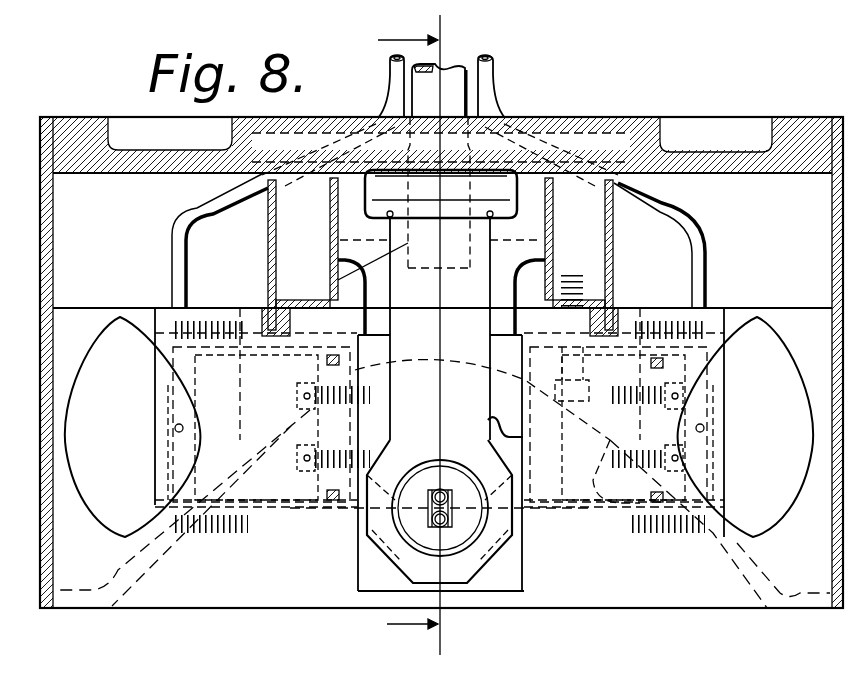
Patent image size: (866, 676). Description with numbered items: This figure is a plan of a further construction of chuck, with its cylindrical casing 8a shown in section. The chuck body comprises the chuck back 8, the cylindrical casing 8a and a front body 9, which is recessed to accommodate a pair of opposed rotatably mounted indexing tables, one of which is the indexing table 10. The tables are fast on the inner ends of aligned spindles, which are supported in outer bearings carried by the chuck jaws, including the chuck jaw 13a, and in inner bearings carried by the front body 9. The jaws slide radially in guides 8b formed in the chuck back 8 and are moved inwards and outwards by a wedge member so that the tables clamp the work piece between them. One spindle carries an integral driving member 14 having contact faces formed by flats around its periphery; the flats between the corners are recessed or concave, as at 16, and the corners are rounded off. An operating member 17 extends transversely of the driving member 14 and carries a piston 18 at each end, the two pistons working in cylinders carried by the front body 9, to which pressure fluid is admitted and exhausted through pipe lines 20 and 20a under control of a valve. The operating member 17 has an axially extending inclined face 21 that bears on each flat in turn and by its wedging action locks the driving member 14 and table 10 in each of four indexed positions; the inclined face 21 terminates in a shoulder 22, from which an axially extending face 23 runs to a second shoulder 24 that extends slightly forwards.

The chuck back 8 is at (690, 170).
The cylindrical casing 8a is at (53, 290).
The guides 8b is at (441, 194).
The front body 9 is at (96, 563).
The indexing table 10 is at (436, 335).
The chuck jaw 13a is at (472, 320).
The driving member 14 is at (357, 523).
The recessed flat portion 16 is at (487, 503).
The operating member 17 is at (510, 413).
The piston 18 is at (320, 376).
The pipe line 20 is at (172, 246).
The pipe line 20a is at (705, 246).
The inclined face 21 is at (430, 450).
The shoulder 22 is at (488, 425).
The axially extending face 23 is at (608, 437).
The second shoulder 24 is at (593, 482).